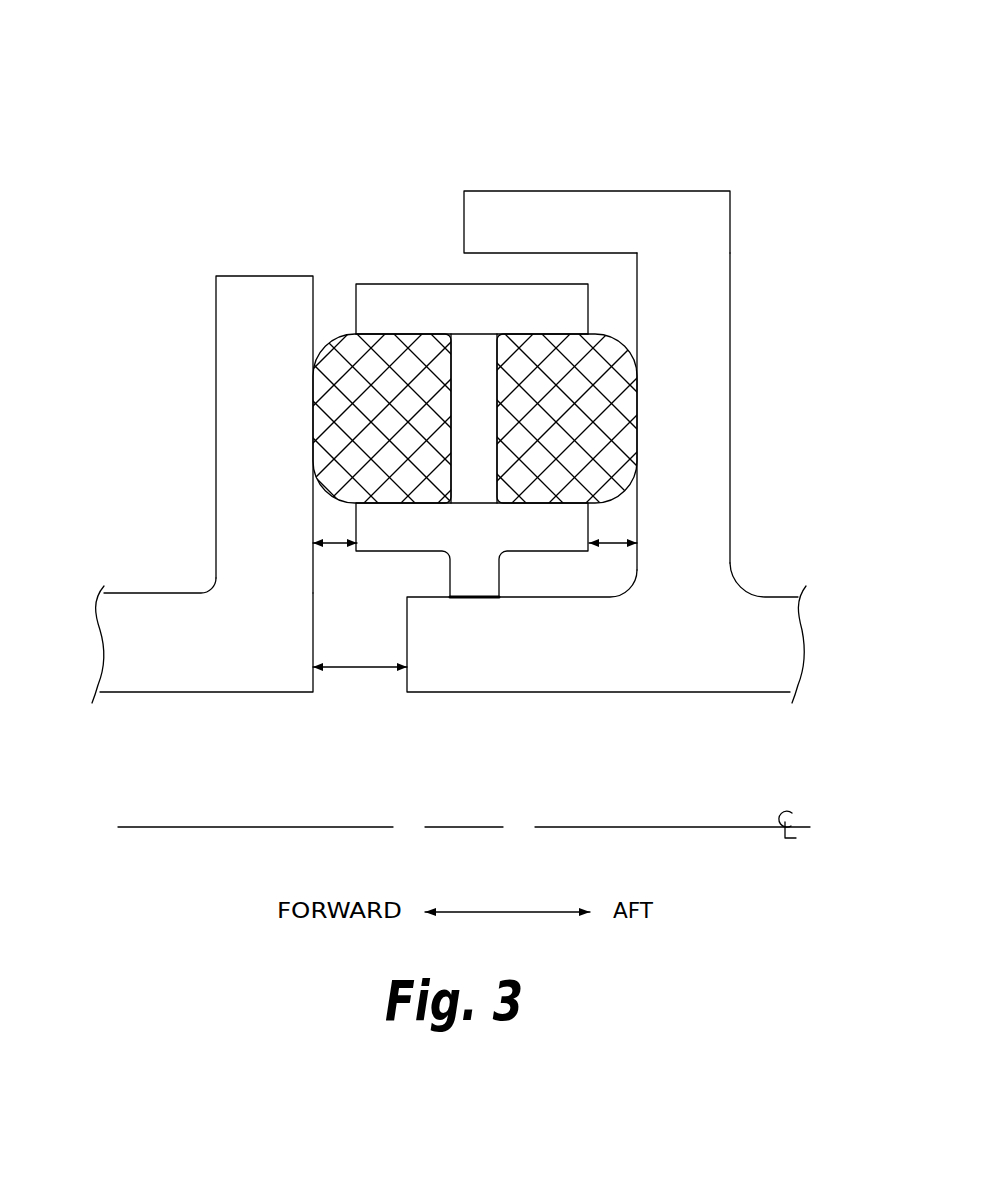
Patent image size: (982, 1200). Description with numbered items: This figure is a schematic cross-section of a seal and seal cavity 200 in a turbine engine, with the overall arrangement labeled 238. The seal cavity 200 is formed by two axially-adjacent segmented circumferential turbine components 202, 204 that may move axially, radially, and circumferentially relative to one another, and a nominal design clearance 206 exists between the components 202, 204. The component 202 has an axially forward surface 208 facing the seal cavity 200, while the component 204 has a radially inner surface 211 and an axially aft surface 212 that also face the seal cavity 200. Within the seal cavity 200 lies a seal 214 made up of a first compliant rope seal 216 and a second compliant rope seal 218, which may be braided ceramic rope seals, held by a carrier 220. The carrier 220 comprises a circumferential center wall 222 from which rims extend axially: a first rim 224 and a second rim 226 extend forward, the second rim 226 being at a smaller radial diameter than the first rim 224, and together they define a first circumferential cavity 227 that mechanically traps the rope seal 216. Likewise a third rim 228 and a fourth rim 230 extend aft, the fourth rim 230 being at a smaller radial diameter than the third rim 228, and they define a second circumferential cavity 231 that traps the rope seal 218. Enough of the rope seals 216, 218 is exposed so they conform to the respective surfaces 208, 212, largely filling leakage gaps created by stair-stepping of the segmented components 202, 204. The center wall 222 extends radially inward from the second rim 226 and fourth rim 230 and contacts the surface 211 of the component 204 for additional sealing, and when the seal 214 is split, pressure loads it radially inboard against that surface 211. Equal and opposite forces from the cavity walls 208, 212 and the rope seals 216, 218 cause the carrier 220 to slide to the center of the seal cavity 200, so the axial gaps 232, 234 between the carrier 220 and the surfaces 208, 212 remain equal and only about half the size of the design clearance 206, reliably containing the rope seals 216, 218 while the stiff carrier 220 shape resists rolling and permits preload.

The seal assembly 238 is at (344, 58).
The seal cavity 200 is at (434, 196).
The carrier 220 is at (484, 279).
The seal 214 is at (397, 265).
The axially forward surface 208 is at (313, 300).
The axially aft surface 212 is at (637, 292).
The first rim 224 is at (385, 318).
The third rim 228 is at (575, 310).
The first compliant seal 216 is at (342, 389).
The second compliant seal 218 is at (608, 381).
The circumferential center wall 222 is at (477, 474).
The first circumferential cavity 227 is at (433, 503).
The second circumferential cavity 231 is at (514, 504).
The second rim 226 is at (387, 530).
The fourth rim 230 is at (568, 522).
The axial gap 232 is at (337, 545).
The axial gap 234 is at (616, 546).
The turbine component 202 is at (198, 694).
The nominal design clearance 206 is at (360, 669).
The turbine component 204 is at (500, 694).
The radially inner surface 211 is at (560, 597).